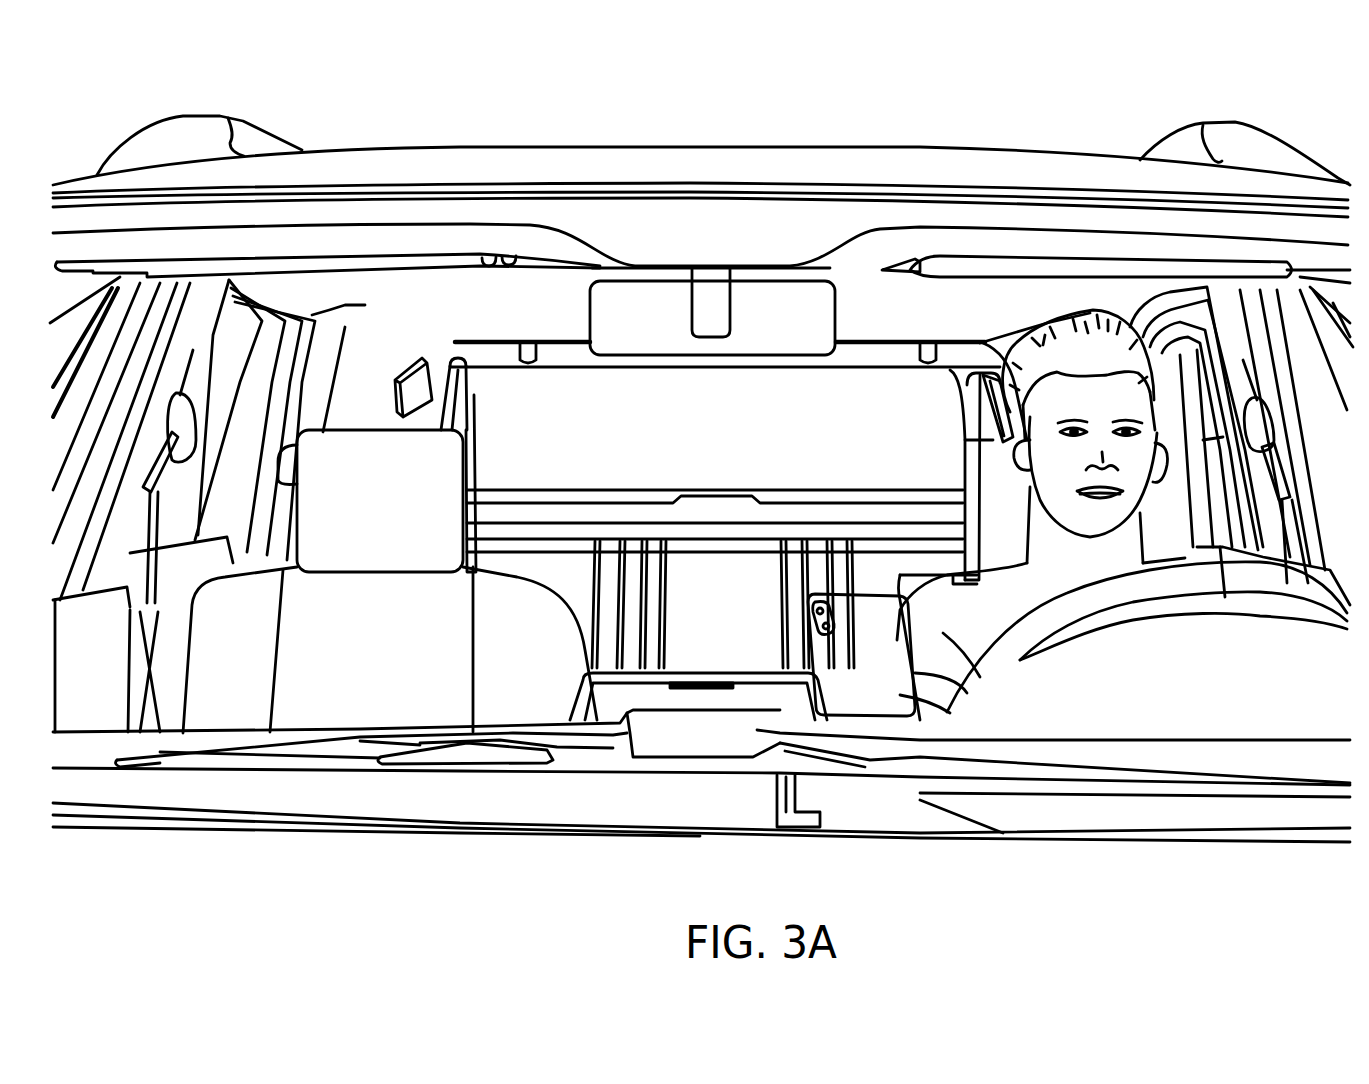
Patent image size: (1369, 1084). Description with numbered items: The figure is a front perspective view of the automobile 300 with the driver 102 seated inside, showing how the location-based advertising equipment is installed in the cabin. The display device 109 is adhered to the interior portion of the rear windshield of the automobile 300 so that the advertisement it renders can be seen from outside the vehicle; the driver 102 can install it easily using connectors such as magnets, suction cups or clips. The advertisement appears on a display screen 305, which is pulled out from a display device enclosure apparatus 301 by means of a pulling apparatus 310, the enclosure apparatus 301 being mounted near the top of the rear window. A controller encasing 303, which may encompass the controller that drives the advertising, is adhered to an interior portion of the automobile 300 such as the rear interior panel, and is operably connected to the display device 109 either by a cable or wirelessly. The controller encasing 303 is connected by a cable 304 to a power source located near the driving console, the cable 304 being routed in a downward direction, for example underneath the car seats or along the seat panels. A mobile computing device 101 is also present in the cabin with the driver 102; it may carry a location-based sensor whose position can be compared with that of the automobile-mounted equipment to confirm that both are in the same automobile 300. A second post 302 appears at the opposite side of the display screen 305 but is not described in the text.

The automobile 300 is at (1032, 108).
The display device enclosure apparatus 301 is at (465, 395).
The second sensor post 302 is at (973, 410).
The controller encasing 303 is at (421, 360).
The cable 304 is at (393, 396).
The display screen 305 is at (837, 407).
The pulling apparatus 310 is at (442, 372).
The display device 109 is at (711, 505).
The mobile computing device 101 is at (884, 663).
The driver 102 is at (1105, 556).